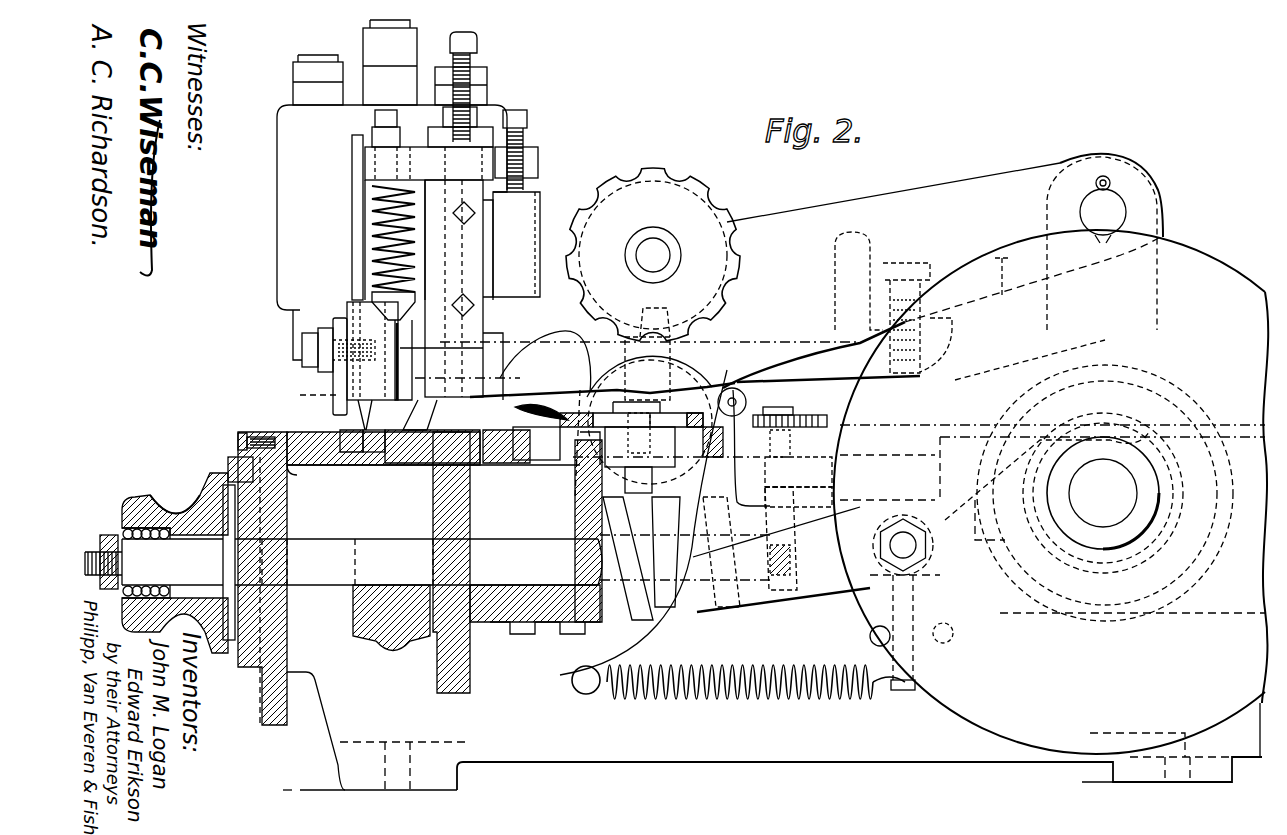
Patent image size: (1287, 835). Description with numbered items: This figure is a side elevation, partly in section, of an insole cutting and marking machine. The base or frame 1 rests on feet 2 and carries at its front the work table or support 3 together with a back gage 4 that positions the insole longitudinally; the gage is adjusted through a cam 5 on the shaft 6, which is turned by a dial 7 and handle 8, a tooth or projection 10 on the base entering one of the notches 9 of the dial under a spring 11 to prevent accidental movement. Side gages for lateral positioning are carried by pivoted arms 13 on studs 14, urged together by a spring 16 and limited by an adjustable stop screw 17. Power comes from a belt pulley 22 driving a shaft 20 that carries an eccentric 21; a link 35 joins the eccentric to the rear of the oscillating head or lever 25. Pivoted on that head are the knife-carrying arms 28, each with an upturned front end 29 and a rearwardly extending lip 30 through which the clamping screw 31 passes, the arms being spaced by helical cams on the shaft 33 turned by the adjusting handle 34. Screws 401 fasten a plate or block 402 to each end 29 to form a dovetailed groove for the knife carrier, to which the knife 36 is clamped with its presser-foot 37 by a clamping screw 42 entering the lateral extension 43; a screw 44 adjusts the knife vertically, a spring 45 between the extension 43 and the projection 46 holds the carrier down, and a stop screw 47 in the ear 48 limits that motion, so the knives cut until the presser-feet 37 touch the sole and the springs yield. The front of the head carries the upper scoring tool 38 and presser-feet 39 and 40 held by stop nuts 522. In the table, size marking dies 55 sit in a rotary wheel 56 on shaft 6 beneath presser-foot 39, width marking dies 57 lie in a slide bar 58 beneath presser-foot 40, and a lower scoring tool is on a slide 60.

The base or frame 1 is at (715, 762).
The feet 2 is at (340, 768).
The work table or support 3 is at (370, 452).
The back gage 4 is at (565, 428).
The cam 5 is at (618, 470).
The shaft 6 is at (398, 538).
The dial 7 is at (230, 470).
The handle 8 is at (170, 498).
The notches 9 is at (202, 472).
The tooth or projection 10 is at (240, 436).
The spring 11 is at (130, 533).
The pivoted arms 13 is at (538, 438).
The studs 14 is at (828, 401).
The spring 16 is at (740, 412).
The adjustable stop screw 17 is at (732, 388).
The driving shaft 20 is at (1105, 515).
The eccentric 21 is at (1180, 395).
The belt pulley 22 is at (1225, 285).
The oscillating head or lever 25 is at (535, 220).
The knife-carrying arms 28 is at (835, 372).
The upturned front end 29 is at (372, 245).
The rearwardly extending lip 30 is at (540, 168).
The clamping screw 31 is at (530, 118).
The shaft 33 is at (662, 257).
The adjusting handle 34 is at (680, 192).
The link 35 is at (1165, 232).
The cutting knives 36 is at (355, 158).
The presser-foot 37 is at (336, 412).
The upper scoring tool 38 is at (345, 400).
The presser-foot 39 is at (478, 414).
The presser-foot 40 is at (420, 455).
The clamping screw 42 is at (310, 350).
The lateral extension 43 is at (392, 232).
The screw 44 is at (402, 148).
The spring 45 is at (372, 212).
The projection 46 is at (448, 235).
The stop screw 47 is at (478, 42).
The rearwardly extending ear 48 is at (478, 130).
The size marking dies 55 is at (470, 670).
The rotary carrier or wheel 56 is at (470, 630).
The width marking dies 57 is at (440, 455).
The slide bar 58 is at (420, 430).
The slide 60 is at (362, 468).
The screws 401 is at (466, 226).
The plate or block 402 is at (488, 270).
The stop nuts 522 is at (296, 74).